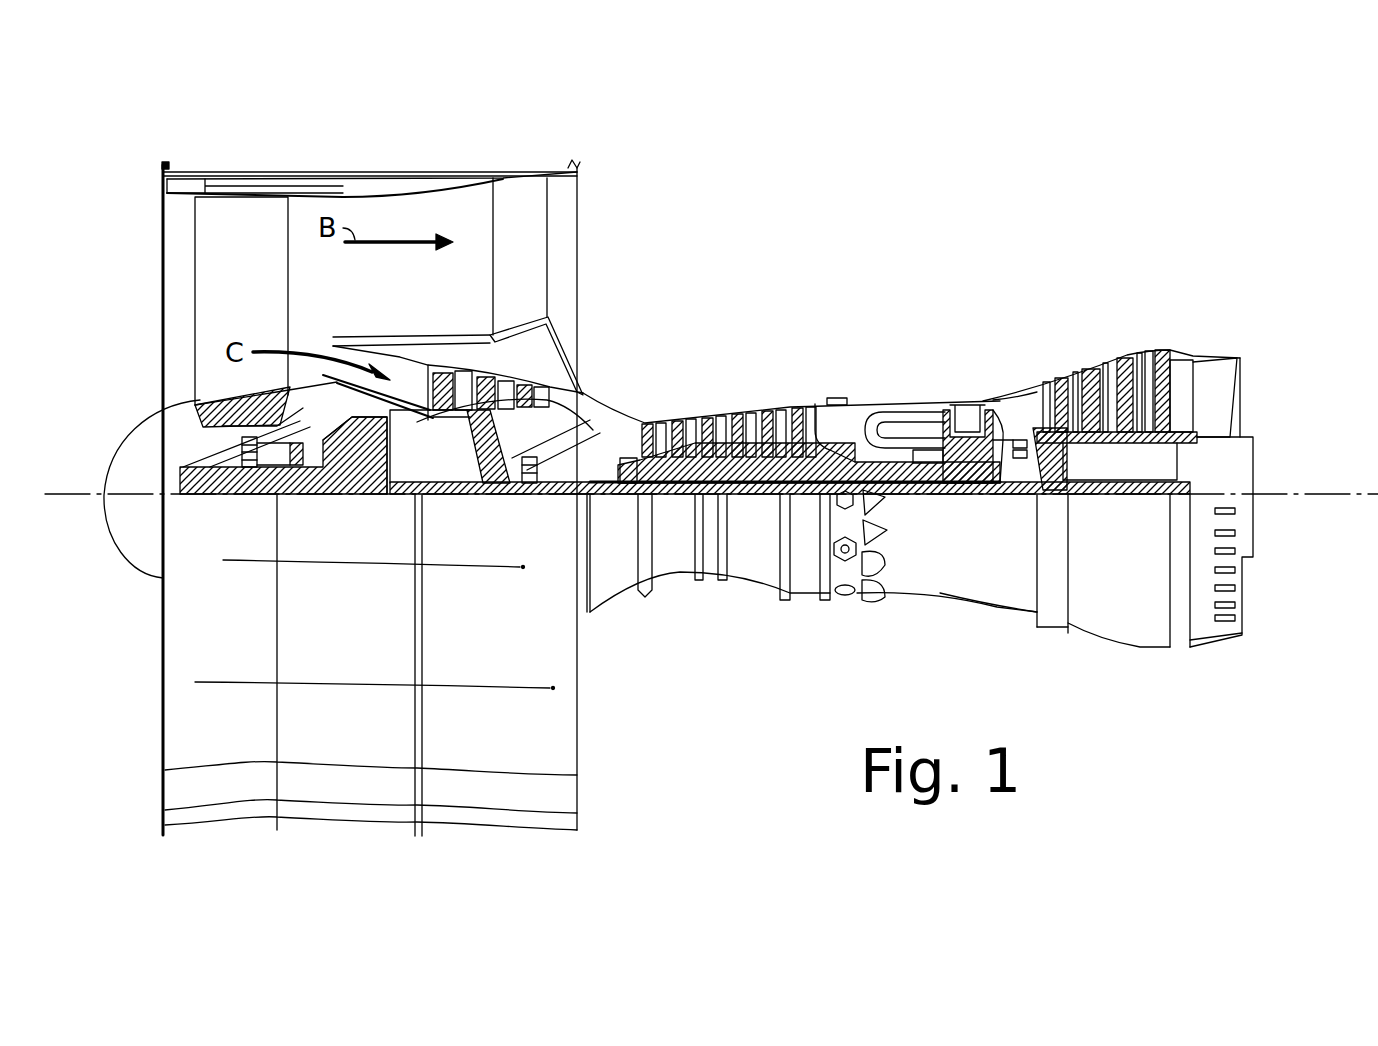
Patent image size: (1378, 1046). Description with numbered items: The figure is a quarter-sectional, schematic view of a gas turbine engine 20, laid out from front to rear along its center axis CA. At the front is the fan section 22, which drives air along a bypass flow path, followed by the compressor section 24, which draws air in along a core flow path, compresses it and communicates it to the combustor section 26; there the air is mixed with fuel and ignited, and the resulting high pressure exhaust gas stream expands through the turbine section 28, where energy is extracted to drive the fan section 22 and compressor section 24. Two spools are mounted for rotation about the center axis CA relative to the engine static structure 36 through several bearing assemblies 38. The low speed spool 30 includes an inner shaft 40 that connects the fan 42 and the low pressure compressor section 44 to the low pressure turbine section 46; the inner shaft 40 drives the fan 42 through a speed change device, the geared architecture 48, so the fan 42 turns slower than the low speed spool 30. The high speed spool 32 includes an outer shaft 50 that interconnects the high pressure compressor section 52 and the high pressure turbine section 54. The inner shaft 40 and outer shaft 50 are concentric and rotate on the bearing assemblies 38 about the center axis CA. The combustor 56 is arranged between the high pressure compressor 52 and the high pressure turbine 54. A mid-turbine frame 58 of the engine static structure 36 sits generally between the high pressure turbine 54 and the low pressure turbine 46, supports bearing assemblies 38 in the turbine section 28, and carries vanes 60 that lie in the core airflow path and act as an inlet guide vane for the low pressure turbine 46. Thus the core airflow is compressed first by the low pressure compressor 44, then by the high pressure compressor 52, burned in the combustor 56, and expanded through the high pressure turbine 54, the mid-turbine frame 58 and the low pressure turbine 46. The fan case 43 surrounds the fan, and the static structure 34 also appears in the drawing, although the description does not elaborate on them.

The gas turbine engine 20 is at (1078, 190).
The fan section 22 is at (395, 142).
The compressor section 24 is at (423, 283).
The combustor section 26 is at (823, 283).
The turbine section 28 is at (943, 283).
The low speed spool 30 is at (752, 512).
The high speed spool 32 is at (785, 463).
The engine static structure 34 is at (1113, 445).
The engine static structure 36 is at (808, 612).
The bearing assemblies 38 is at (247, 470).
The inner shaft 40 is at (595, 497).
The fan 42 is at (256, 281).
The fan case 43 is at (458, 172).
The low pressure compressor section 44 is at (503, 383).
The low pressure turbine section 46 is at (1112, 372).
The geared architecture 48 is at (373, 470).
The outer shaft 50 is at (896, 475).
The high pressure compressor section 52 is at (708, 460).
The high pressure turbine section 54 is at (968, 405).
The combustor 56 is at (880, 428).
The mid-turbine frame 58 is at (1012, 380).
The vanes 60 is at (1007, 417).
The center axis CA is at (1318, 494).